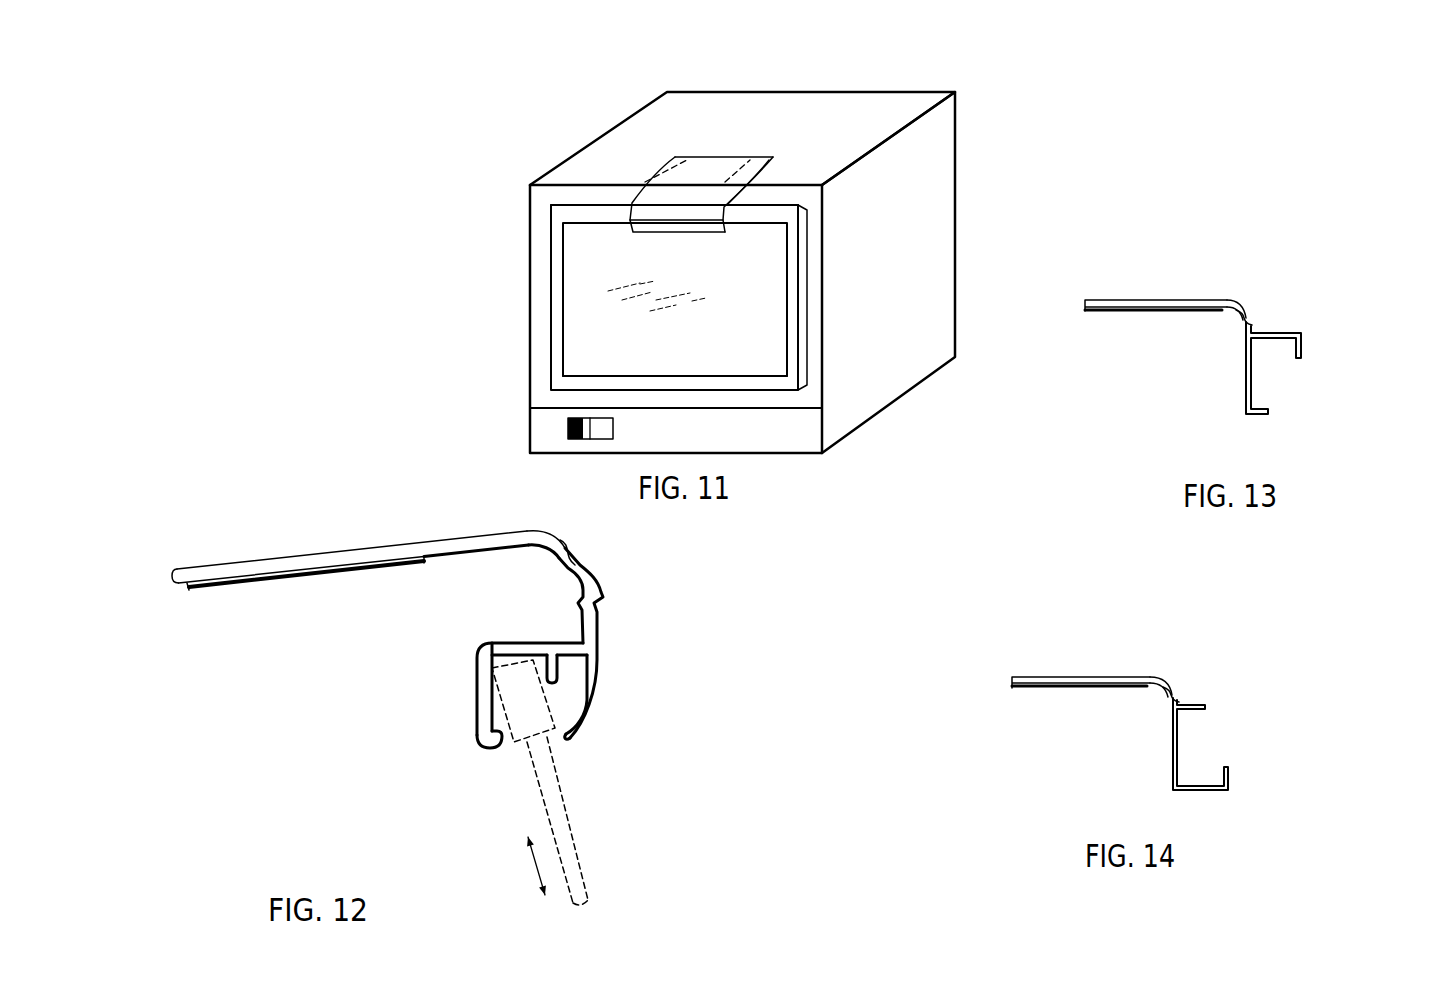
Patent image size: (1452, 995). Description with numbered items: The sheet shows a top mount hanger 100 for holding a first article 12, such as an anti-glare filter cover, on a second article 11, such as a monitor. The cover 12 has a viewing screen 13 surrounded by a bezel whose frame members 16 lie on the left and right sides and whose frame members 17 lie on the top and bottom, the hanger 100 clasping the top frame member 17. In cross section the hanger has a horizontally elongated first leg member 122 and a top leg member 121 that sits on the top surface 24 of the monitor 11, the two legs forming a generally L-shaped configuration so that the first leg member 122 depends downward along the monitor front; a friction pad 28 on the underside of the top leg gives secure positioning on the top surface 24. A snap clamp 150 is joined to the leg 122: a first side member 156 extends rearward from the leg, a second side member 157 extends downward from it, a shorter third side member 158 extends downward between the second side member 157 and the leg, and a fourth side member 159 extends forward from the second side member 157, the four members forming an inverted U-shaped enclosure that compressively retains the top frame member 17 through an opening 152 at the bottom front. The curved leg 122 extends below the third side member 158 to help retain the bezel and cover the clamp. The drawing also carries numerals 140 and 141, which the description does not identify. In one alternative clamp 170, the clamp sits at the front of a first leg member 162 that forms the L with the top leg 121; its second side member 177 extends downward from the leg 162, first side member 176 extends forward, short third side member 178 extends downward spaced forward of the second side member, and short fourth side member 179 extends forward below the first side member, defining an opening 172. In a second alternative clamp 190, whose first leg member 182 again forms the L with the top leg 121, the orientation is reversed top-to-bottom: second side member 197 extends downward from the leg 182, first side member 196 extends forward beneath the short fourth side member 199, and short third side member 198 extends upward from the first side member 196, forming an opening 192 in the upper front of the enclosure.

In FIG. 11, the second article 11 is at (912, 95).
In FIG. 11, the first article 12 is at (595, 200).
In FIG. 11, the viewing screen 13 is at (709, 351).
In FIG. 12, the viewing screen 13 is at (563, 828).
In FIG. 11, the frame members 16 is at (558, 293).
In FIG. 12, the frame members 16 is at (565, 775).
In FIG. 11, the frame members 17 is at (763, 218).
In FIG. 11, the top surface 24 is at (717, 103).
In FIG. 11, the friction pad 28 is at (652, 172).
In FIG. 12, the friction pad 28 is at (297, 578).
In FIG. 13, the friction pad 28 is at (1110, 310).
In FIG. 14, the friction pad 28 is at (1030, 688).
In FIG. 11, the top mount hanger 100 is at (752, 150).
In FIG. 12, the top mount hanger 100 is at (373, 557).
In FIG. 12, the second, top leg member 121 is at (385, 550).
In FIG. 13, the second, top leg member 121 is at (1218, 299).
In FIG. 14, the second, top leg member 121 is at (1102, 673).
In FIG. 12, the first leg member 122 is at (598, 585).
In FIG. 12, the glass edge region 140 is at (565, 773).
In FIG. 12, the direction of insertion 141 is at (537, 868).
In FIG. 12, the snap clamp 150 is at (515, 684).
In FIG. 12, the opening 152 is at (540, 782).
In FIG. 12, the first side member 156 is at (527, 650).
In FIG. 12, the second side member 157 is at (482, 687).
In FIG. 12, the third side member 158 is at (553, 665).
In FIG. 12, the fourth side member 159 is at (493, 745).
In FIG. 13, the first leg member 162 is at (1243, 325).
In FIG. 13, the clamp 170 is at (1249, 364).
In FIG. 13, the opening 172 is at (1278, 388).
In FIG. 13, the first side member 176 is at (1267, 330).
In FIG. 13, the second side member 177 is at (1243, 393).
In FIG. 13, the third side member 178 is at (1308, 345).
In FIG. 13, the fourth side member 179 is at (1257, 417).
In FIG. 14, the first leg member 182 is at (1168, 702).
In FIG. 14, the clamp 190 is at (1177, 738).
In FIG. 14, the opening 192 is at (1220, 748).
In FIG. 14, the first side member 196 is at (1207, 792).
In FIG. 14, the second side member 197 is at (1172, 772).
In FIG. 14, the third side member 198 is at (1232, 778).
In FIG. 14, the fourth side member 199 is at (1192, 705).